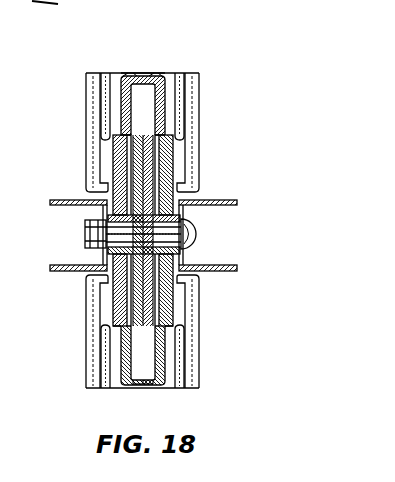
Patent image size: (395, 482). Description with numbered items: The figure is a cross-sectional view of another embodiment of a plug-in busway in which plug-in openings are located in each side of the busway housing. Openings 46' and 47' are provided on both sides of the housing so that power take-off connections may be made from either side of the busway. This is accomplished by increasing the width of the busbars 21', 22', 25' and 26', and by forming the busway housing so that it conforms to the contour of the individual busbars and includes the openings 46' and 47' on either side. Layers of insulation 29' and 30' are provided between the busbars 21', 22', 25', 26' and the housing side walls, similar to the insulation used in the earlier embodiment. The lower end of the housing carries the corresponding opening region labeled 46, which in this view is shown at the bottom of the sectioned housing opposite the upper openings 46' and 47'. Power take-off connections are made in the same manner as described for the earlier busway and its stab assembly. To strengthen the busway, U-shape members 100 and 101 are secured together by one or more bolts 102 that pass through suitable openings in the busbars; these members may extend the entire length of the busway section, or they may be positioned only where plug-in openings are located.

The opening 47' is at (142, 225).
The opening 46' is at (145, 52).
The lower end cap 46 is at (144, 372).
The busbar 21' is at (112, 105).
The busbar 22' is at (183, 234).
The busbar 25' is at (92, 175).
The busbar 26' is at (195, 175).
The layer of insulation 29' is at (89, 290).
The layer of insulation 30' is at (193, 290).
The U-shape member 100 is at (72, 205).
The U-shape member 101 is at (232, 205).
The bolt 102 is at (195, 238).